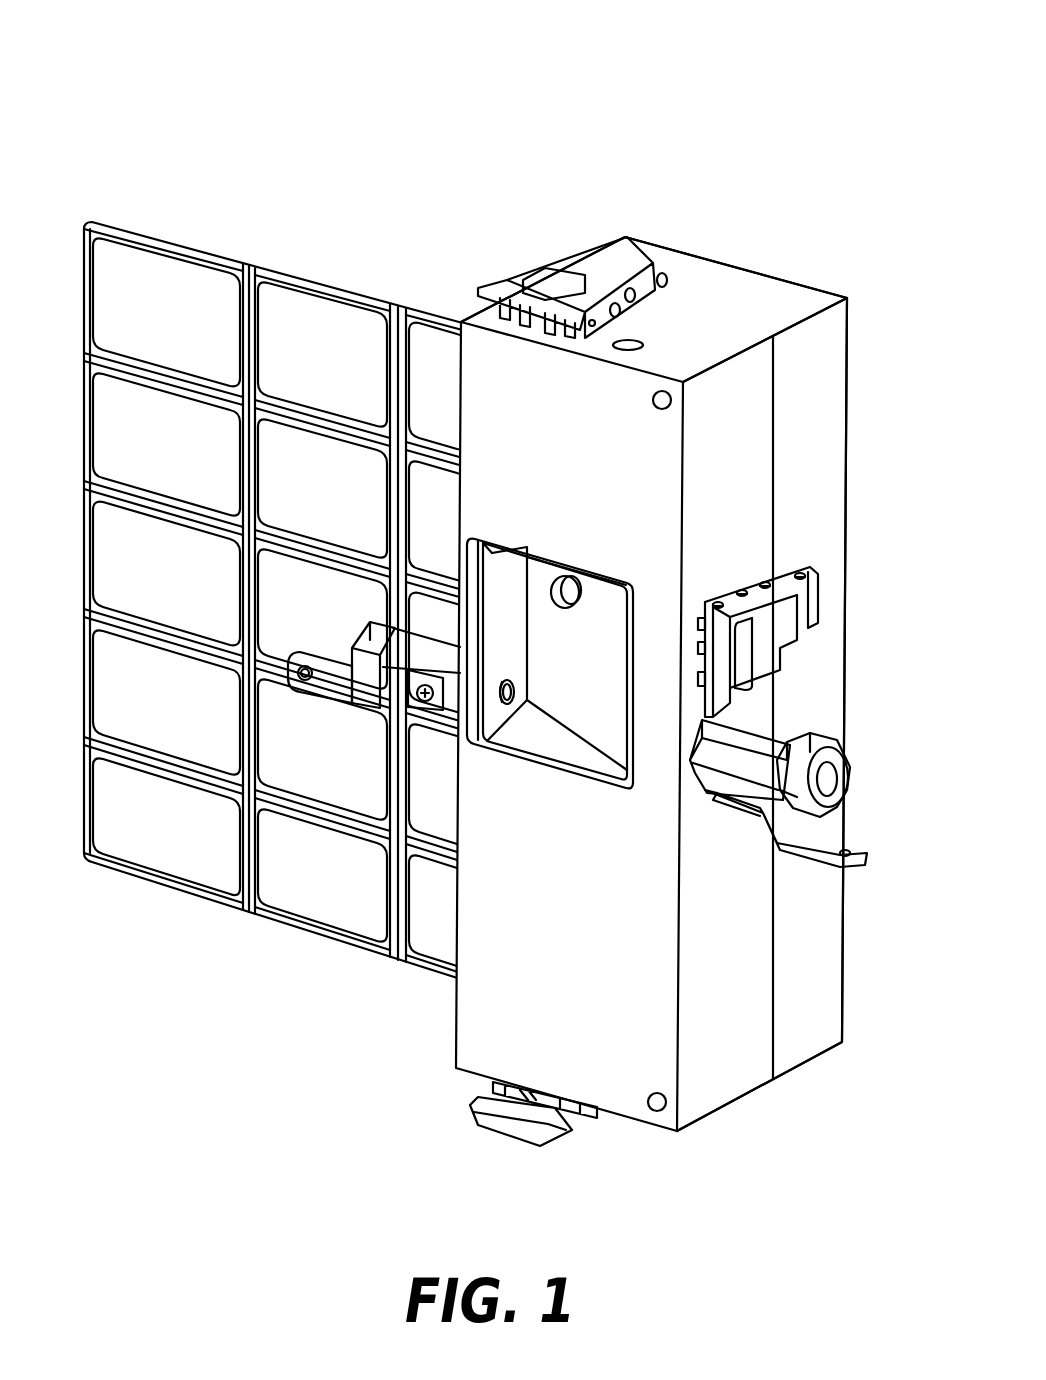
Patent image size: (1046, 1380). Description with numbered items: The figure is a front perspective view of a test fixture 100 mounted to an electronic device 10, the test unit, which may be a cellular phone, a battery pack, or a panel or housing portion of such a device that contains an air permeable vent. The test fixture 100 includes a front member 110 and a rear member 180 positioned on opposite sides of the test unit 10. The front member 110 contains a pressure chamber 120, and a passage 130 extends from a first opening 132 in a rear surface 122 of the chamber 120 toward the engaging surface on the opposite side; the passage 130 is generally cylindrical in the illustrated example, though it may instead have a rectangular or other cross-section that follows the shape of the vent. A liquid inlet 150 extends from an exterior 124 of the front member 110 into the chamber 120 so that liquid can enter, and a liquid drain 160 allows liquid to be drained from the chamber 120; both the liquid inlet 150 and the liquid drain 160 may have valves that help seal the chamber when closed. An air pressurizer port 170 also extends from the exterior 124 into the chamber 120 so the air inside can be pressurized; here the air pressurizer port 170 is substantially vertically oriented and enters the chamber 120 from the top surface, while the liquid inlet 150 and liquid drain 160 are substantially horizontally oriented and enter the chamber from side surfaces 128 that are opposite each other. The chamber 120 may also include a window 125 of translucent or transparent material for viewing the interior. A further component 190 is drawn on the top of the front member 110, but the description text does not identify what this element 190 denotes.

The test fixture 100 is at (822, 88).
The electronic device 10 is at (128, 278).
The front member 110 is at (523, 1023).
The pressure chamber 120 is at (617, 735).
The rear surface 122 is at (595, 683).
The exterior 124 is at (725, 440).
The window 125 is at (550, 712).
The side surfaces 128 is at (510, 642).
The passage 130 is at (582, 567).
The first opening 132 is at (577, 583).
The liquid inlet 150 is at (837, 735).
The liquid drain 160 is at (415, 645).
The air pressurizer port 170 is at (632, 340).
The rear member 180 is at (738, 300).
The connector 190 is at (558, 285).